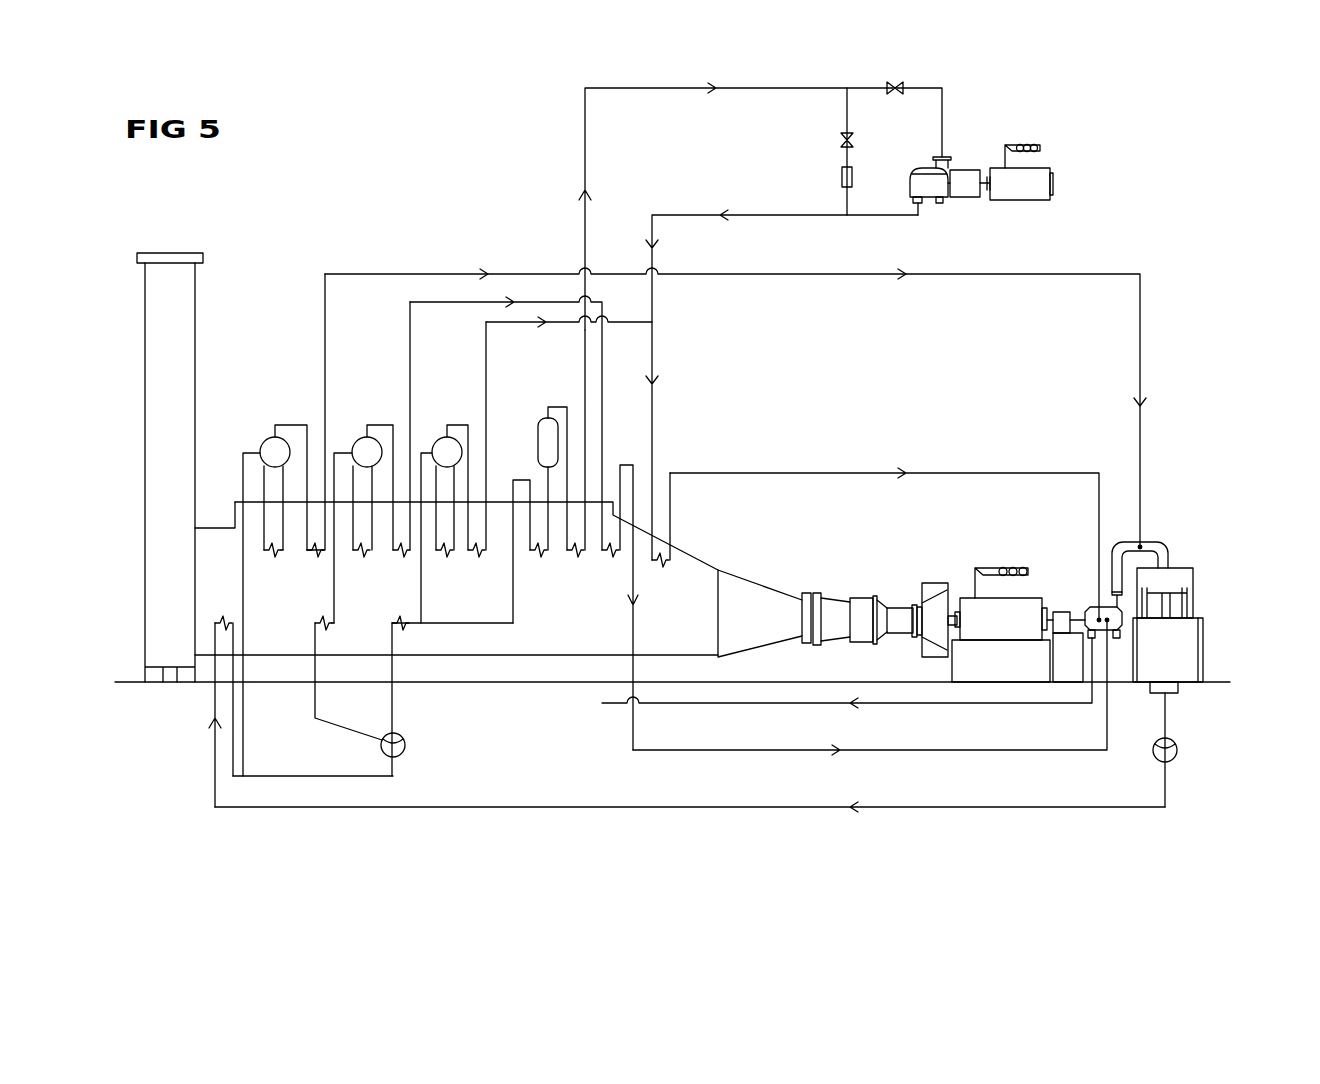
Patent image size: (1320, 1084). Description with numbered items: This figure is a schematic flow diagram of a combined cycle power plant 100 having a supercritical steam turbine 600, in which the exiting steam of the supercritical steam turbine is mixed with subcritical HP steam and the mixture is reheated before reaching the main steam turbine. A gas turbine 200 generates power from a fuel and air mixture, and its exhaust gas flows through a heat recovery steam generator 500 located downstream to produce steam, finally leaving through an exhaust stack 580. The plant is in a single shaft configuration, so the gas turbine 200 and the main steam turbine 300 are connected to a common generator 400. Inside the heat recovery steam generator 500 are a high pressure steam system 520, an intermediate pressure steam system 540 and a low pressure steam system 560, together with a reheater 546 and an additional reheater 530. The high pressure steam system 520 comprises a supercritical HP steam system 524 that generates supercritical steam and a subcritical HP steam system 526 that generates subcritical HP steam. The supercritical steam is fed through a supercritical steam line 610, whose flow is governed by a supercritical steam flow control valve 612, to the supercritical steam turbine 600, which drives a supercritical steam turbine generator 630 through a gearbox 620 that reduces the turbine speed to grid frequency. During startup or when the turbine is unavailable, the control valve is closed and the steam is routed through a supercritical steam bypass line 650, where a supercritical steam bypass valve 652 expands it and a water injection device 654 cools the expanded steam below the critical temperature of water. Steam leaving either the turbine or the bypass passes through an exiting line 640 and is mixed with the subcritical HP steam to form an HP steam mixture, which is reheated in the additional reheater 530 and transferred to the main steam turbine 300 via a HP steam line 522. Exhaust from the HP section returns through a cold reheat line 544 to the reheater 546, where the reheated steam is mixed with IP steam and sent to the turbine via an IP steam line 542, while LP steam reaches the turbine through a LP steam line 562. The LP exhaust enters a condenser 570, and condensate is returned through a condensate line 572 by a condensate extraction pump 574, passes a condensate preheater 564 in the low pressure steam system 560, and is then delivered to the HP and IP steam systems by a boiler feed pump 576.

The combined cycle power plant 100 is at (1180, 97).
The gas turbine 200 is at (862, 597).
The main steam turbine 300 is at (1147, 545).
The common generator 400 is at (1030, 598).
The heat recovery steam generator 500 is at (318, 251).
The high pressure steam system 520 is at (519, 386).
The HP steam line 522 is at (808, 472).
The supercritical HP steam system 524 is at (560, 387).
The subcritical HP steam system 526 is at (447, 409).
The additional reheater 530 is at (672, 510).
The intermediate pressure steam system 540 is at (372, 405).
The IP steam line 542 is at (957, 752).
The cold reheat line 544 is at (958, 705).
The reheater 546 is at (626, 462).
The low pressure steam system 560 is at (273, 405).
The LP steam line 562 is at (1098, 272).
The condensate preheater 564 is at (222, 622).
The condenser 570 is at (1178, 653).
The condensate line 572 is at (957, 810).
The condensate extraction pump 574 is at (1177, 748).
The boiler feed pump 576 is at (405, 741).
The exhaust stack 580 is at (197, 305).
The supercritical steam turbine 600 is at (930, 192).
The supercritical steam line 610 is at (585, 143).
The supercritical steam flow control valve 612 is at (897, 78).
The gearbox 620 is at (970, 170).
The supercritical steam turbine generator 630 is at (1053, 183).
The exiting line 640 is at (688, 214).
The supercritical steam bypass line 650 is at (850, 118).
The supercritical steam bypass valve 652 is at (840, 138).
The water injection device 654 is at (841, 172).